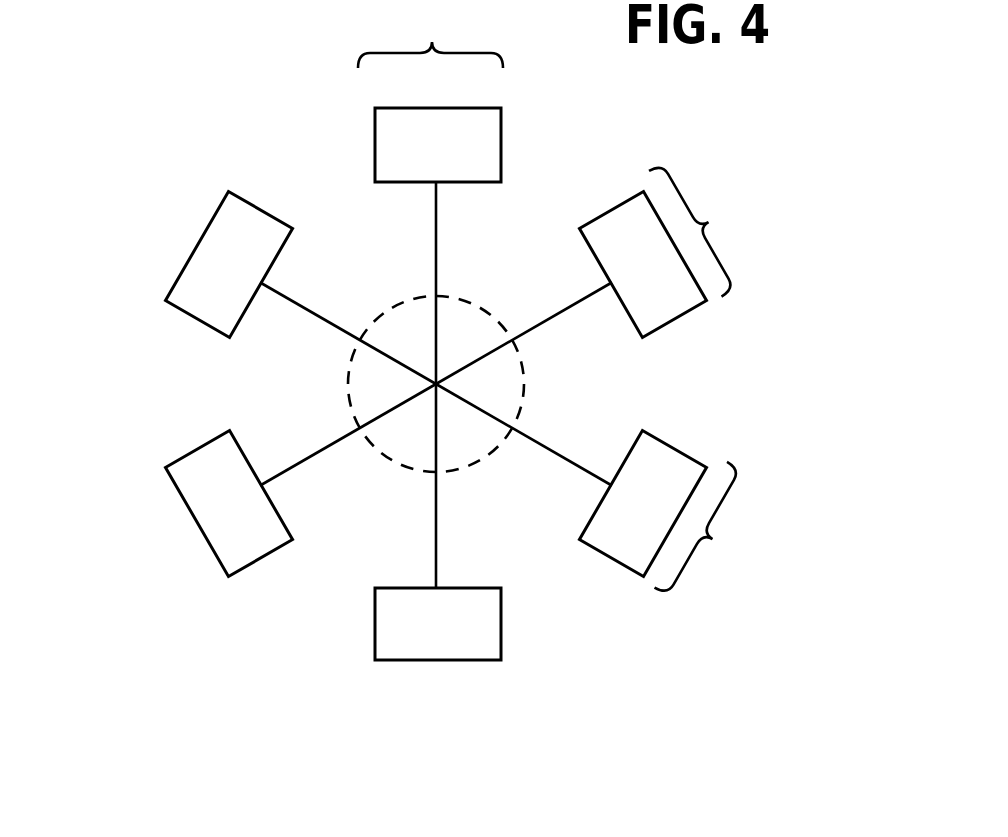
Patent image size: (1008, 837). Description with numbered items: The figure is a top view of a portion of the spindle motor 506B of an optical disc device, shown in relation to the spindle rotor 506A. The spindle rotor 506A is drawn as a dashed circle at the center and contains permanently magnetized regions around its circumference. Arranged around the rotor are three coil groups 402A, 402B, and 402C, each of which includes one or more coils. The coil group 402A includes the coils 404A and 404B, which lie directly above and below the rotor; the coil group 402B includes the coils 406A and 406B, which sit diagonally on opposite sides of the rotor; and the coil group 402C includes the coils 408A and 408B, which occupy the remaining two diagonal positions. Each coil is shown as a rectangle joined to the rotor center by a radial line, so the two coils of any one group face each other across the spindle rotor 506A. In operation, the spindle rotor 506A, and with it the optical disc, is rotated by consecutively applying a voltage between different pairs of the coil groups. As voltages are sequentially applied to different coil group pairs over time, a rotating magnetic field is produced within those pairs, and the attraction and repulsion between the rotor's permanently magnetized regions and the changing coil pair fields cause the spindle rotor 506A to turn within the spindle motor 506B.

The coil group 402A is at (430, 38).
The coil group 402B is at (716, 227).
The coil group 402C is at (716, 531).
The coil 404A is at (375, 137).
The coil 404B is at (497, 640).
The coil 406A is at (677, 310).
The coil 406B is at (202, 530).
The coil 408A is at (667, 440).
The coil 408B is at (207, 228).
The spindle rotor 506A is at (525, 372).
The spindle motor 506B is at (126, 637).